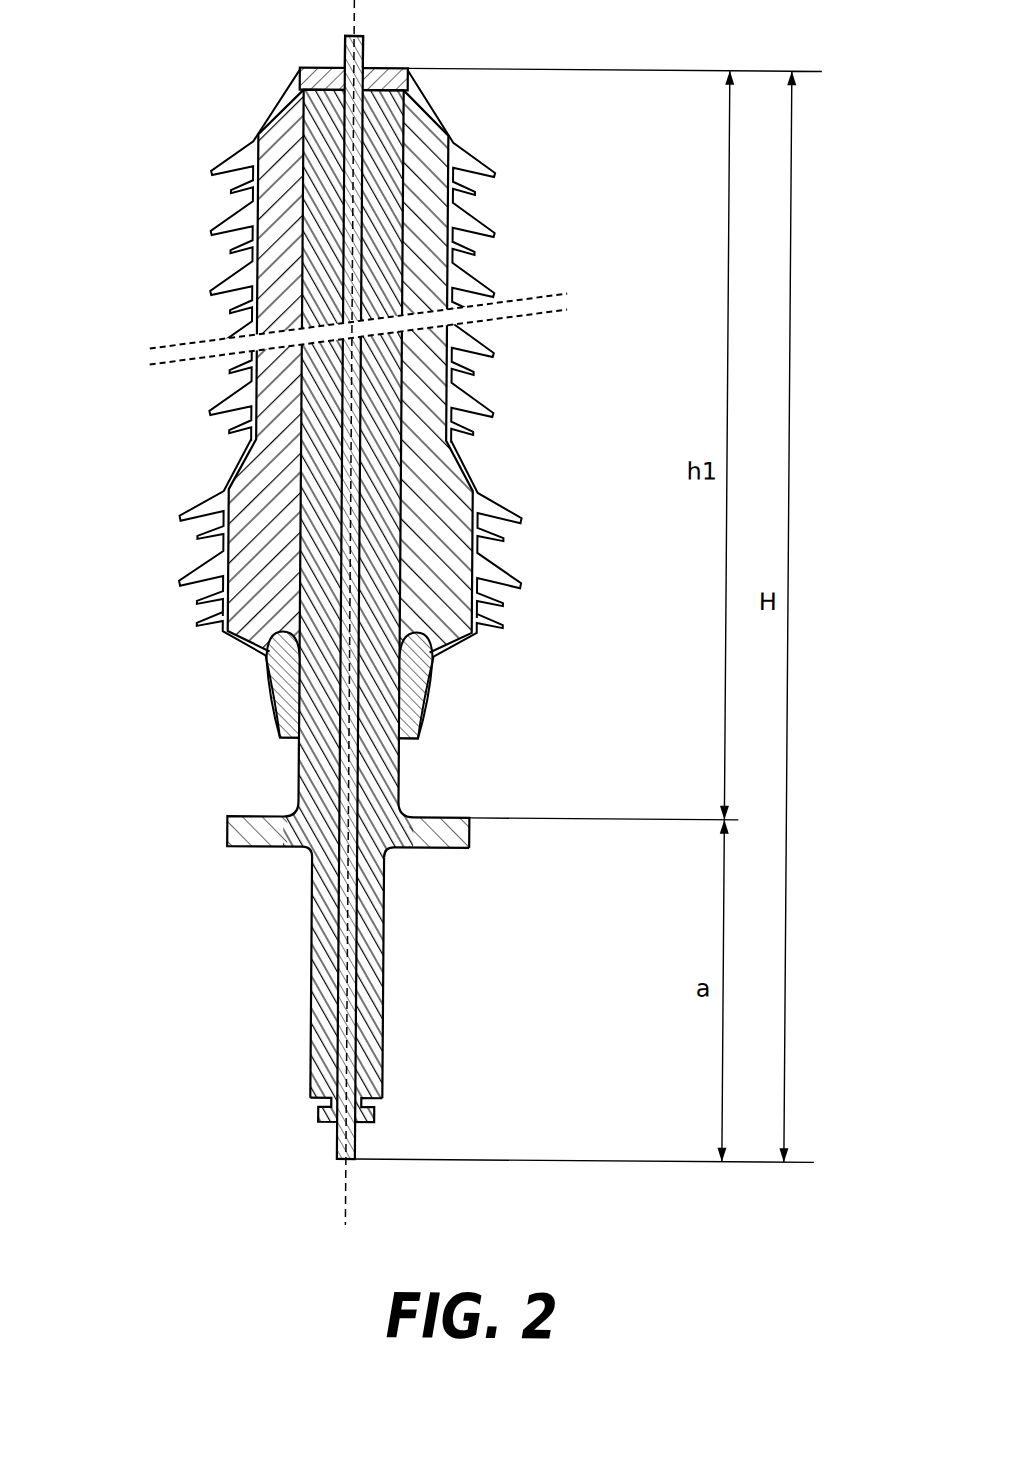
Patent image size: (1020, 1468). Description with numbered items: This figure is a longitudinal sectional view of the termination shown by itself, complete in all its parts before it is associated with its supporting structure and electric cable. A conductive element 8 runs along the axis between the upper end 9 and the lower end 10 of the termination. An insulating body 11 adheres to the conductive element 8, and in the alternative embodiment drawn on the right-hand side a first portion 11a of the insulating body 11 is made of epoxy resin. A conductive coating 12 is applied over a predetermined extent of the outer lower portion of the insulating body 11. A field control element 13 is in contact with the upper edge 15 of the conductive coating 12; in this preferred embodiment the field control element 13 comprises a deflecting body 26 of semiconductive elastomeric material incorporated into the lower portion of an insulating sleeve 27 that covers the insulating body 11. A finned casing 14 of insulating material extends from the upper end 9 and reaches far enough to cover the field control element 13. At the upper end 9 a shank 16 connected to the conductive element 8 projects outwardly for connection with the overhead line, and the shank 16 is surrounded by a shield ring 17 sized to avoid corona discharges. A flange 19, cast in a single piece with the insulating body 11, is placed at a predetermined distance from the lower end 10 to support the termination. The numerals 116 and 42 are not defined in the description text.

The upper end 9 is at (320, 609).
The shield ring 17 is at (322, 82).
The shank 16 is at (368, 50).
The insulating layer 116 is at (402, 243).
The insulating sleeve 27 is at (438, 392).
The finned casing 14 is at (212, 410).
The insulating body 11 is at (317, 498).
The first portion 11a is at (382, 488).
The field control element 13 is at (197, 644).
The deflecting body 26 is at (267, 667).
The upper edge 15 is at (433, 660).
The conductive coating 12 is at (402, 773).
The mounting flange 42 is at (257, 847).
The flange 19 is at (437, 837).
The conductive element 8 is at (342, 1050).
The lower end 10 is at (330, 1135).